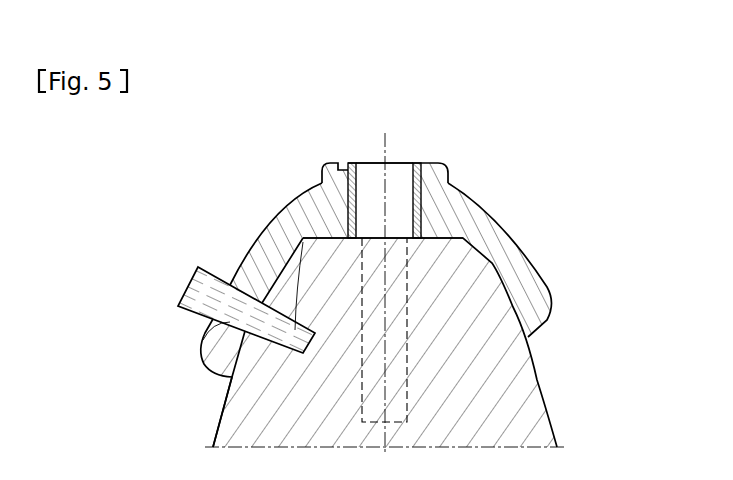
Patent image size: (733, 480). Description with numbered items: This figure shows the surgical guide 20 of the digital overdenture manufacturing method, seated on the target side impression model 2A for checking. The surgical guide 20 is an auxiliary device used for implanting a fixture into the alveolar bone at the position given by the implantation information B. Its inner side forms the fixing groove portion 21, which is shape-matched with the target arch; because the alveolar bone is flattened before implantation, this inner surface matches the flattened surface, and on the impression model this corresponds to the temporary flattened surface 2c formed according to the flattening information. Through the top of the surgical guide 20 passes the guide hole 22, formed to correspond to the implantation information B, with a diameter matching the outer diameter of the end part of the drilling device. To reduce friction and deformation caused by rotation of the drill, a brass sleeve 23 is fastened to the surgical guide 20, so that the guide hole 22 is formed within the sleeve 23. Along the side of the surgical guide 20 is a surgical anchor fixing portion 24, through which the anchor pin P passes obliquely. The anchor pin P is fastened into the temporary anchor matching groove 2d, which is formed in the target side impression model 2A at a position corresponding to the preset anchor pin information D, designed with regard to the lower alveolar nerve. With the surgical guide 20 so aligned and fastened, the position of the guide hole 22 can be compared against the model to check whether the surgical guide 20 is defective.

The surgical guide 20 is at (437, 239).
The fixing groove portion 21 is at (440, 240).
The guide hole 22 is at (422, 218).
The brass sleeve 23 is at (450, 188).
The surgical anchor fixing portion 24 is at (203, 340).
The temporary flattened surface 2c is at (322, 232).
The temporary anchor matching groove 2d is at (252, 262).
The target side impression model 2A is at (222, 410).
The anchor pin P is at (178, 298).
The anchor pin information D is at (212, 298).
The implantation information B is at (410, 357).